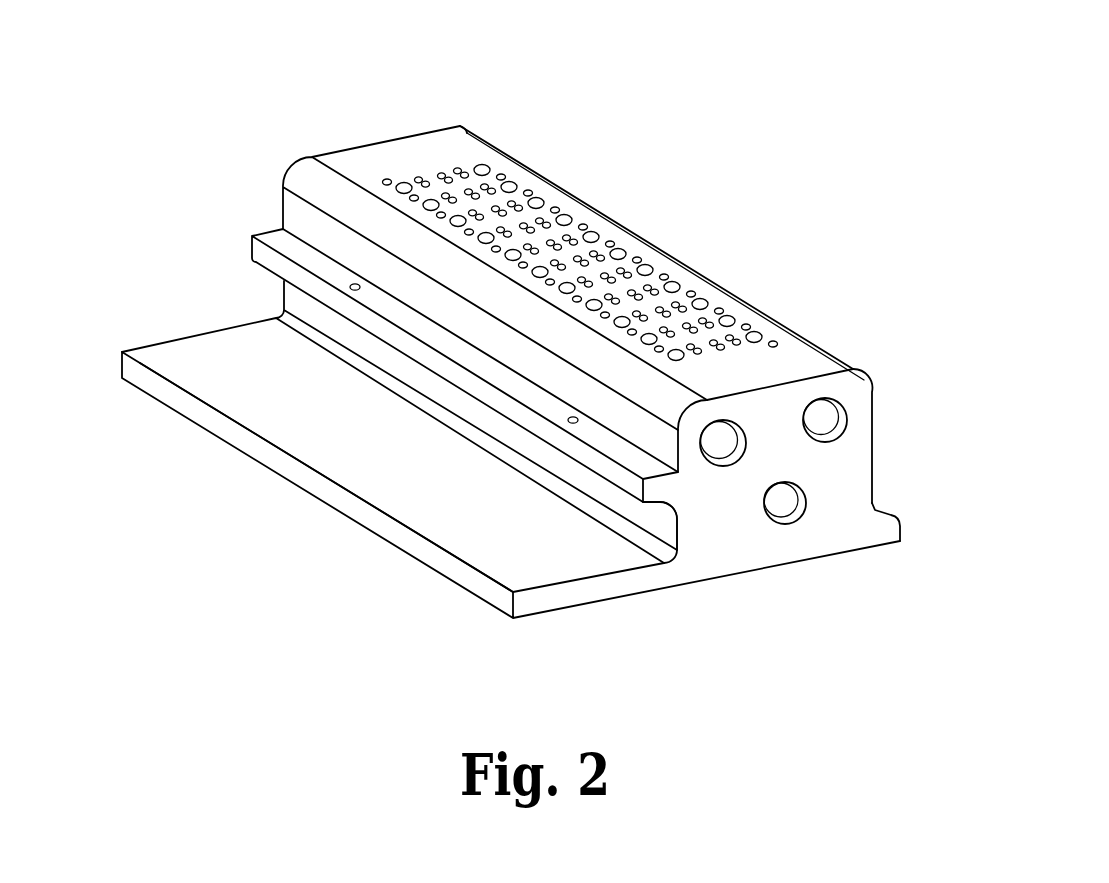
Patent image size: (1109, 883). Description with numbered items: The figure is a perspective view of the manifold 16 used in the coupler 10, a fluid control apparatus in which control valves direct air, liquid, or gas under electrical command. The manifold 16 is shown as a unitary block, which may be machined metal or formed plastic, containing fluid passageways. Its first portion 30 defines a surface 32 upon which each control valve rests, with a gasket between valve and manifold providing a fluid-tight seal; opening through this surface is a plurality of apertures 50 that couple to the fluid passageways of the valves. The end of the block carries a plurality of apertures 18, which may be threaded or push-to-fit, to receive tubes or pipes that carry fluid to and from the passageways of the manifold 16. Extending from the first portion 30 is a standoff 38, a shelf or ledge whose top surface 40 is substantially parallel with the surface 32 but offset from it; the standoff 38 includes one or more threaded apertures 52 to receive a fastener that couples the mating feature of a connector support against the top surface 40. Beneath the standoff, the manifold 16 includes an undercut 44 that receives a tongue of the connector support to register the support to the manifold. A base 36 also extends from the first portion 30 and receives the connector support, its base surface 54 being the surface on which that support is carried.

The coupler 10 is at (668, 65).
The manifold 16 is at (733, 547).
The apertures 18 is at (838, 425).
The first portion 30 is at (838, 512).
The surface 32 is at (795, 350).
The base 36 is at (562, 600).
The standoff 38 is at (663, 492).
The top surface 40 is at (637, 457).
The undercut 44 is at (660, 562).
The apertures 50 is at (487, 189).
The threaded apertures 52 is at (352, 288).
The base surface 54 is at (480, 547).